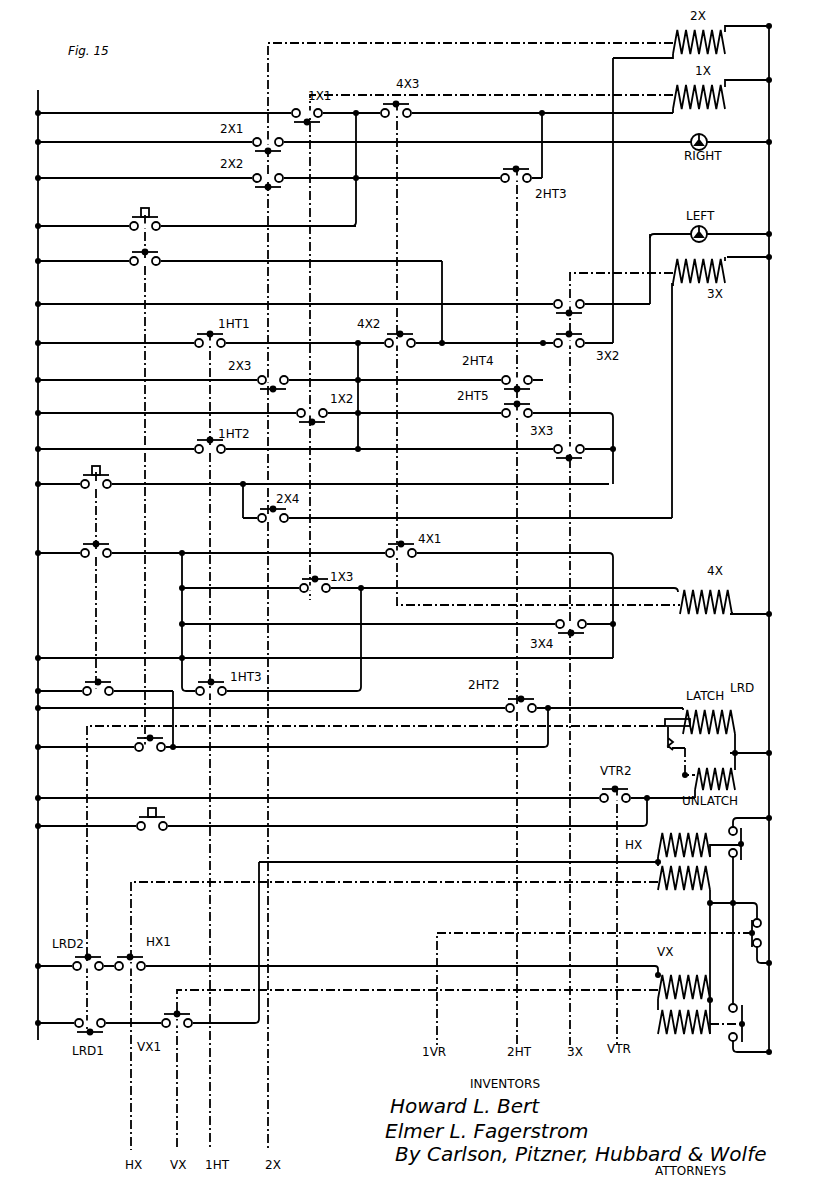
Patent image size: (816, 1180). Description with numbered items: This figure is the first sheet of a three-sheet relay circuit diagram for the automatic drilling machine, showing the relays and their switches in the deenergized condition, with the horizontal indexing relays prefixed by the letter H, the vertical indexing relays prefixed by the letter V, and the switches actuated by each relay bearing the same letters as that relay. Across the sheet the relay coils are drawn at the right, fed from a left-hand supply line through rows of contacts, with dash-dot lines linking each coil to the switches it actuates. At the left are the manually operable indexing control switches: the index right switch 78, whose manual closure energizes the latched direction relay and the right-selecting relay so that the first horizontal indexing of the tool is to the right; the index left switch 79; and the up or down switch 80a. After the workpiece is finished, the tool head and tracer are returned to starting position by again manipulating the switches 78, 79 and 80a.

The index right switch 78 is at (170, 220).
The index left switch 79 is at (76, 478).
The up or down switch 80a is at (168, 821).